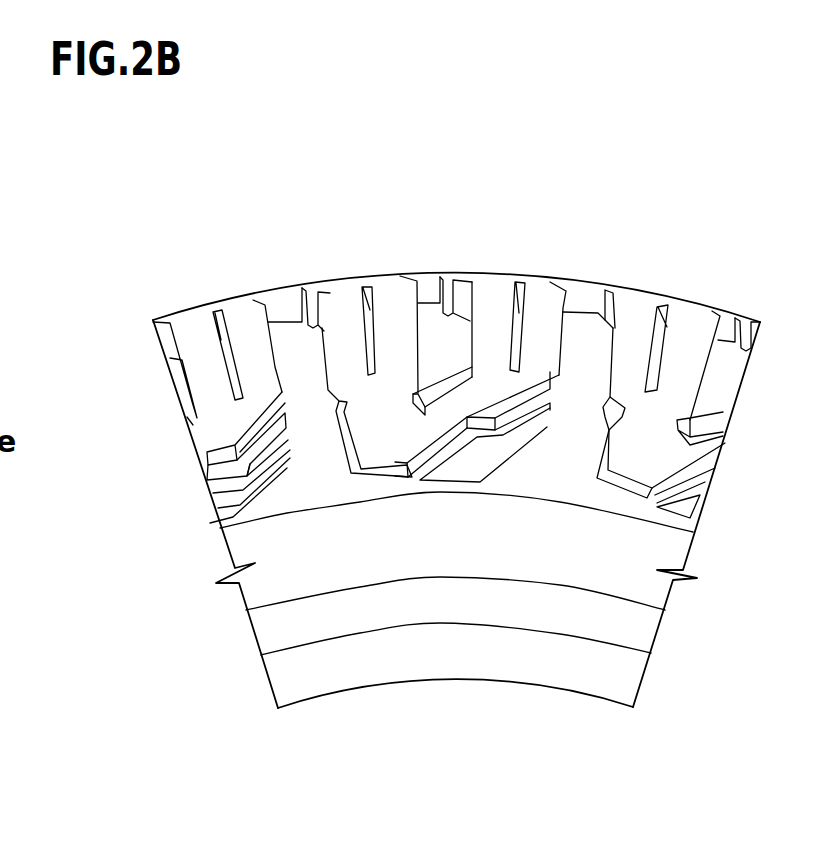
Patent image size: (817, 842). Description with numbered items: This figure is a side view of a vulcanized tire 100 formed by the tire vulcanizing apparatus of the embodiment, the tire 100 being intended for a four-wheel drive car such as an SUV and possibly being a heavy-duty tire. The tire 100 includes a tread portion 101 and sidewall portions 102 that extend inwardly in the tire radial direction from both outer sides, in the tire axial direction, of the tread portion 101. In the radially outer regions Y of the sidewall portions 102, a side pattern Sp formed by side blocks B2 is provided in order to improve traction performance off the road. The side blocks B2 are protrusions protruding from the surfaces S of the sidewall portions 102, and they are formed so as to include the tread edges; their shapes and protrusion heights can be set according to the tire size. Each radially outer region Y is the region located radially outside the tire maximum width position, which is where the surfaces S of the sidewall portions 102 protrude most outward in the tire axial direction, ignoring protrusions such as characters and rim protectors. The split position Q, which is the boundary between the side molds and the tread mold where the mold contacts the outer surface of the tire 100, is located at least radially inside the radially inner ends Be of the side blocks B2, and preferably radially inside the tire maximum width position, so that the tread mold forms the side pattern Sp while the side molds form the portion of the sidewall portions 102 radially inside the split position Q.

The tire 100 is at (594, 237).
The tread portion 101 is at (425, 272).
The sidewall portions 102 is at (155, 385).
The radially outer regions Y is at (777, 325).
The split position Q is at (268, 522).
The side pattern Sp is at (387, 430).
The surfaces S is at (567, 447).
The radially inner ends Be is at (443, 485).
The side blocks B2 is at (483, 460).